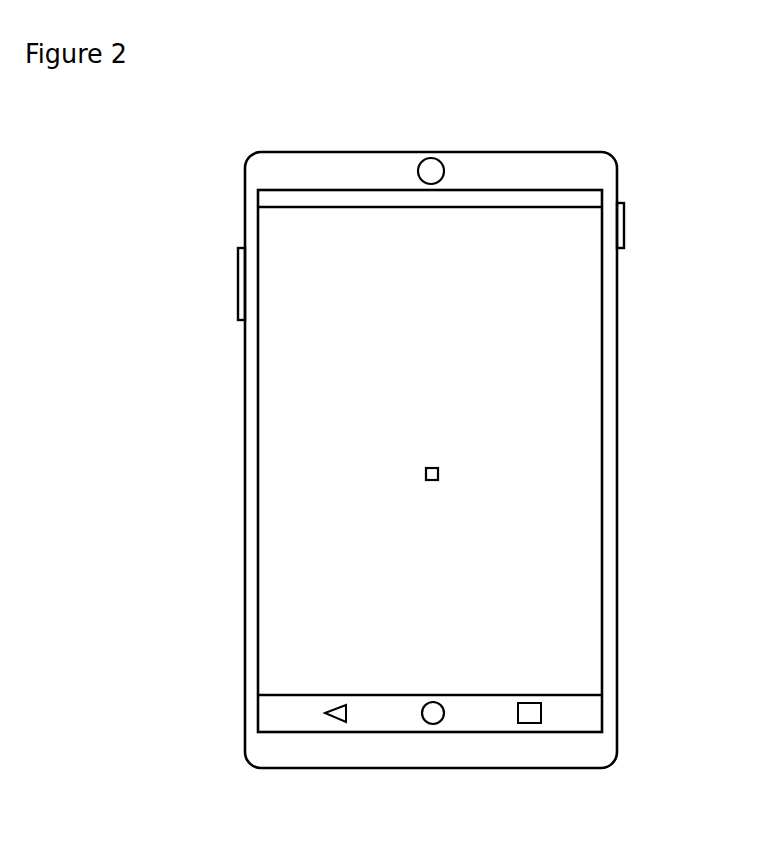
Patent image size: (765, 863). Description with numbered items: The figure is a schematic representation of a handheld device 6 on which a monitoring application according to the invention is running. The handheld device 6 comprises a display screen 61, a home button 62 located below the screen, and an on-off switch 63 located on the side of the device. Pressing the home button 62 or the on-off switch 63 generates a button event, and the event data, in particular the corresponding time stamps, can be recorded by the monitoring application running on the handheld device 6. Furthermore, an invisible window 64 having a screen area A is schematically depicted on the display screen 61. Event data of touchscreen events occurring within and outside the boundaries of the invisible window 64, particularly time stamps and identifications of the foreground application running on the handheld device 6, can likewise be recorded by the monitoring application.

The handheld device 6 is at (420, 79).
The display screen 61 is at (285, 363).
The home button 62 is at (437, 718).
The on-off switch 63 is at (625, 233).
The invisible window 64 is at (438, 474).